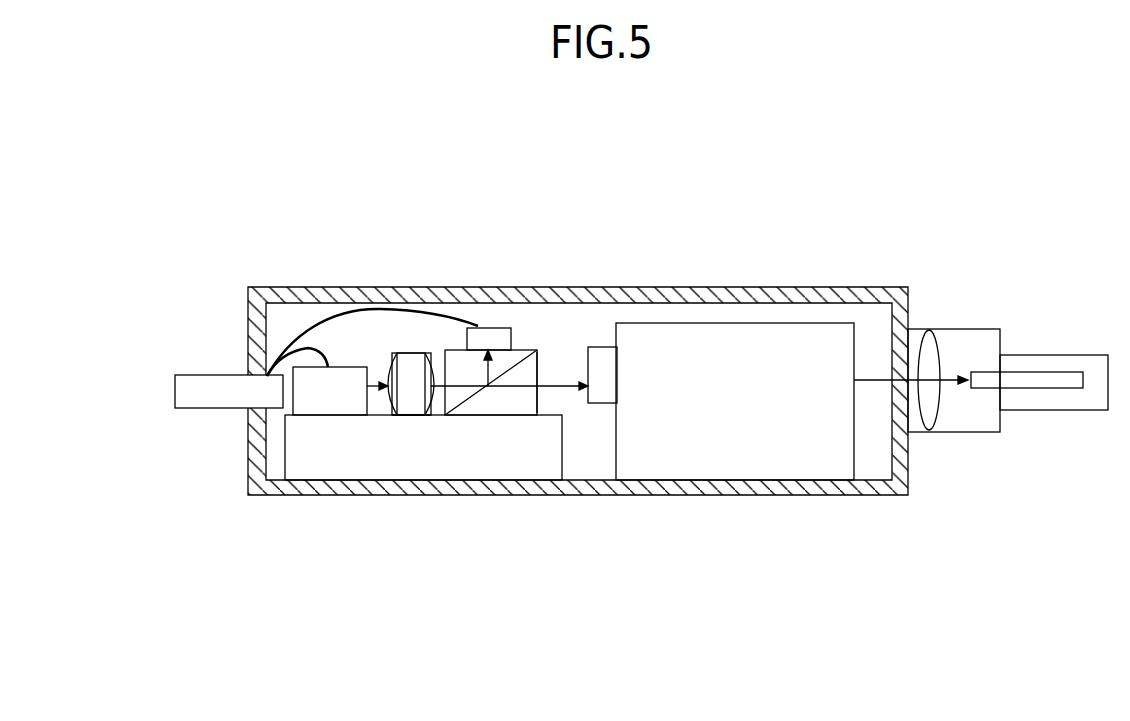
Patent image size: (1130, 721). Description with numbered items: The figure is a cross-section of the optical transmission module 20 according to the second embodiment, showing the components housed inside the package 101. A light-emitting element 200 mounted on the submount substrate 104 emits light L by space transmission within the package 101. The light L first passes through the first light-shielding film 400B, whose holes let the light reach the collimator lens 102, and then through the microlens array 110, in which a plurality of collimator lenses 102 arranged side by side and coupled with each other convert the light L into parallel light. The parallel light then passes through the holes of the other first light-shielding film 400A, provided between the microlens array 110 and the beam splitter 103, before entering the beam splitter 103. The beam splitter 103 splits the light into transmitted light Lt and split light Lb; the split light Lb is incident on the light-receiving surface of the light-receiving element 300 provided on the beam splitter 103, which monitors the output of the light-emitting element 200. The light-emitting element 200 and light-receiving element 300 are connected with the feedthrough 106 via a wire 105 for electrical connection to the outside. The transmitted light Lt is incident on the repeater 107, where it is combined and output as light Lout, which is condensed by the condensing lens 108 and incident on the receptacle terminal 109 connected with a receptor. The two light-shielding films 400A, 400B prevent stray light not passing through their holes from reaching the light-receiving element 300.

The optical transmission module 20 is at (937, 217).
The package 101 is at (357, 287).
The collimator lens 102 is at (432, 362).
The beam splitter 103 is at (538, 372).
The submount substrate 104 is at (562, 452).
The wire 105 is at (307, 347).
The feedthrough 106 is at (173, 392).
The repeater 107 is at (807, 323).
The condensing lens 108 is at (936, 410).
The receptacle terminal 109 is at (1053, 372).
The microlens array 110 is at (412, 403).
The light-emitting element 200 is at (328, 402).
The light-receiving element 300 is at (503, 328).
The first light-shielding film 400A is at (441, 403).
The first light-shielding film 400B is at (388, 413).
The light L is at (377, 408).
The split light Lb is at (493, 370).
The transmitted light Lt is at (583, 390).
The light Lout is at (873, 385).